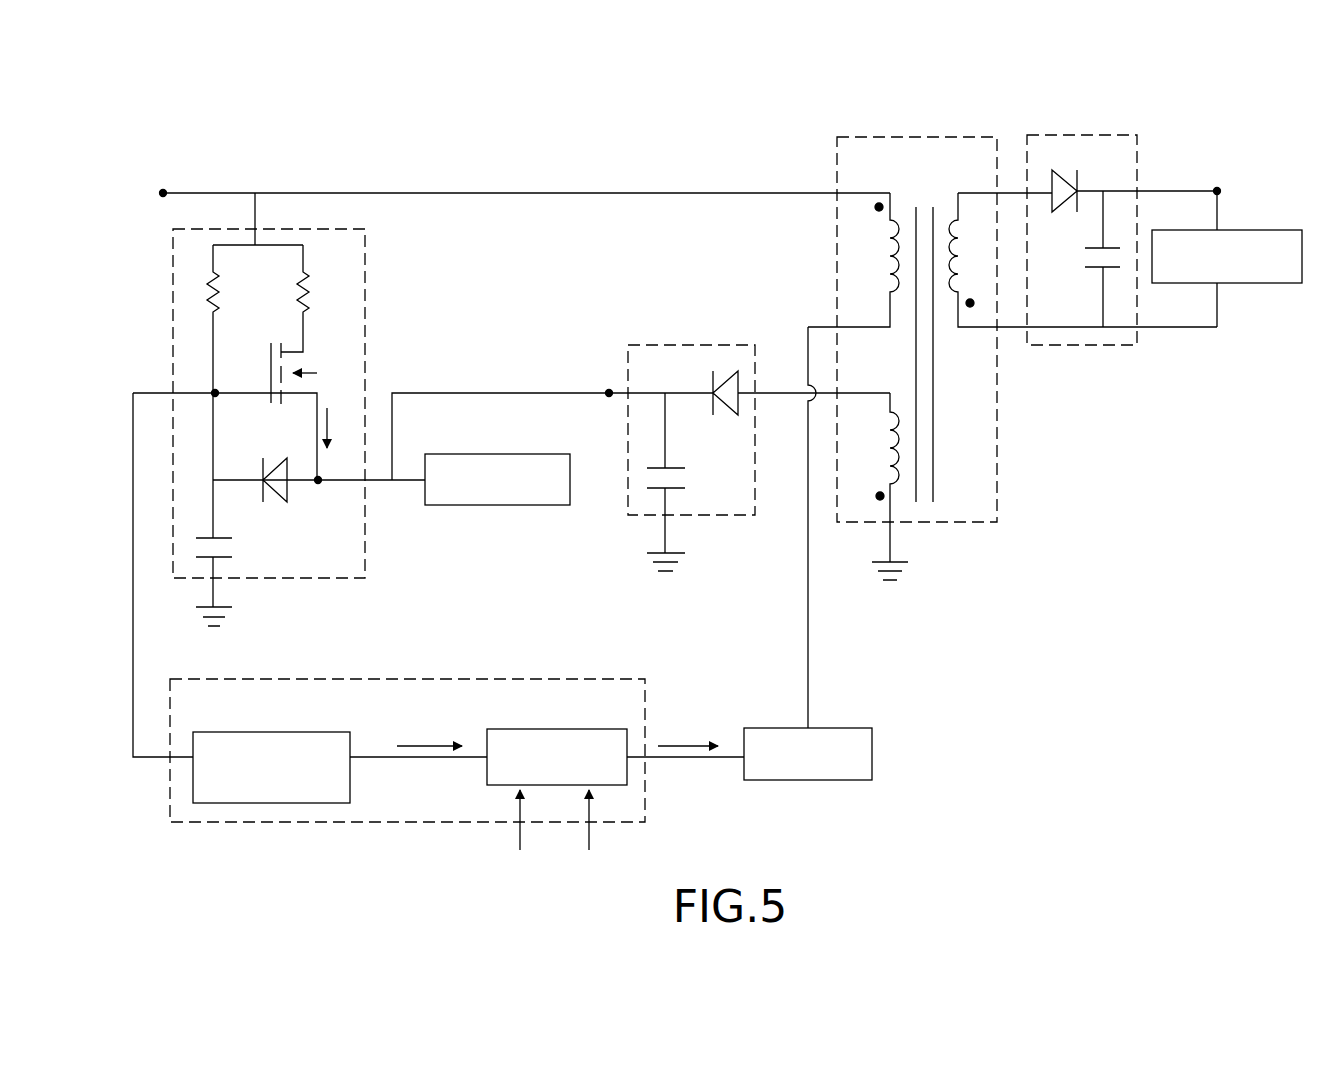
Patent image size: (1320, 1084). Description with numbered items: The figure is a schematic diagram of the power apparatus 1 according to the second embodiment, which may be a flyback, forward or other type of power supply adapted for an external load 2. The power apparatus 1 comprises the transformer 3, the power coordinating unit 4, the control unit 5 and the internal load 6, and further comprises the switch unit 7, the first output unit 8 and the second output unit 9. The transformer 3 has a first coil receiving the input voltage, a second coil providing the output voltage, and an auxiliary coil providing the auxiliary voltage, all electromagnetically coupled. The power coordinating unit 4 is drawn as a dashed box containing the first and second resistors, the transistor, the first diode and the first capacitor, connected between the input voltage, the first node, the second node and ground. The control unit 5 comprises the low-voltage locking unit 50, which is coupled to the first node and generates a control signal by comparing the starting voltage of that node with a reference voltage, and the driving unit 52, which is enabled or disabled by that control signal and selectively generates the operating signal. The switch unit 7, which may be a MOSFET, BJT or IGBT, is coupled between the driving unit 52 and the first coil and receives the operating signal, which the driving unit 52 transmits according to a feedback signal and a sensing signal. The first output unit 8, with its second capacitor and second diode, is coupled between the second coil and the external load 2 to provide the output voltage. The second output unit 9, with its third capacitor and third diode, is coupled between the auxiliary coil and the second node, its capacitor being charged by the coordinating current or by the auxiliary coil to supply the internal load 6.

The power apparatus 1 is at (240, 122).
The external load 2 is at (1248, 230).
The transformer 3 is at (938, 137).
The power coordinating unit 4 is at (173, 320).
The control unit 5 is at (488, 678).
The internal load 6 is at (513, 454).
The switch unit 7 is at (855, 728).
The first output unit 8 is at (1090, 135).
The second output unit 9 is at (693, 345).
The low-voltage locking unit 50 is at (302, 732).
The driving unit 52 is at (553, 729).